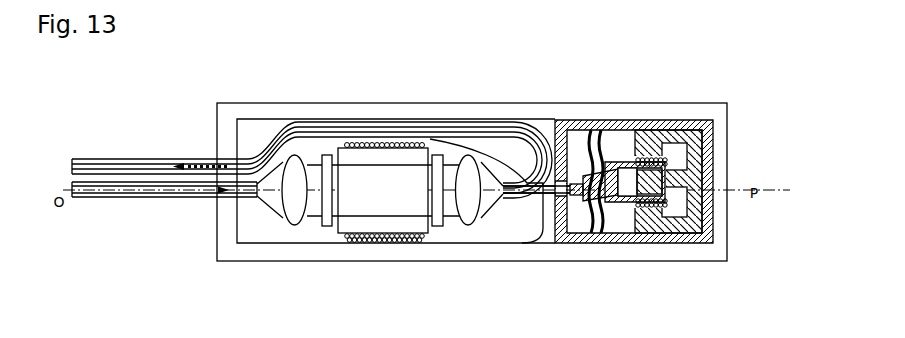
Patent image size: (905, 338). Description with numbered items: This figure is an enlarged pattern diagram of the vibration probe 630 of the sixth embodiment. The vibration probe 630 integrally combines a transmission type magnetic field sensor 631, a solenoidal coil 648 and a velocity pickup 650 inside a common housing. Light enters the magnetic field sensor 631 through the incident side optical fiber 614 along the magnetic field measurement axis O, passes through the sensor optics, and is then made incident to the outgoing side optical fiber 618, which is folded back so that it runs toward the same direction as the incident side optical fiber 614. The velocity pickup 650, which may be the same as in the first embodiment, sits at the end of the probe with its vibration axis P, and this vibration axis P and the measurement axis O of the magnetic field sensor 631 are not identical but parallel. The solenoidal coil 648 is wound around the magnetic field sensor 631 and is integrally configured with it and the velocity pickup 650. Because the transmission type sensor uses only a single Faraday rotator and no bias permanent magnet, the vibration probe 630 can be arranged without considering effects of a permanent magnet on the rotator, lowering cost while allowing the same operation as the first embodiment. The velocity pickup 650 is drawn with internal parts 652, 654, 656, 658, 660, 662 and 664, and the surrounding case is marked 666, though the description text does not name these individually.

The incident side optical fiber 614 is at (146, 198).
The outgoing side optical fiber 618 is at (141, 158).
The vibration probe 630 is at (201, 95).
The magnetic field sensor 631 is at (395, 171).
The solenoidal coil 648 is at (387, 243).
The velocity pickup 650 is at (627, 169).
The ferrule 652 is at (563, 130).
The flexible member 654 is at (604, 143).
The holder 656 is at (628, 156).
The coil 658 is at (667, 145).
The yoke 660 is at (673, 150).
The magnet 662 is at (640, 210).
The bobbin 664 is at (647, 205).
The case 666 is at (224, 239).